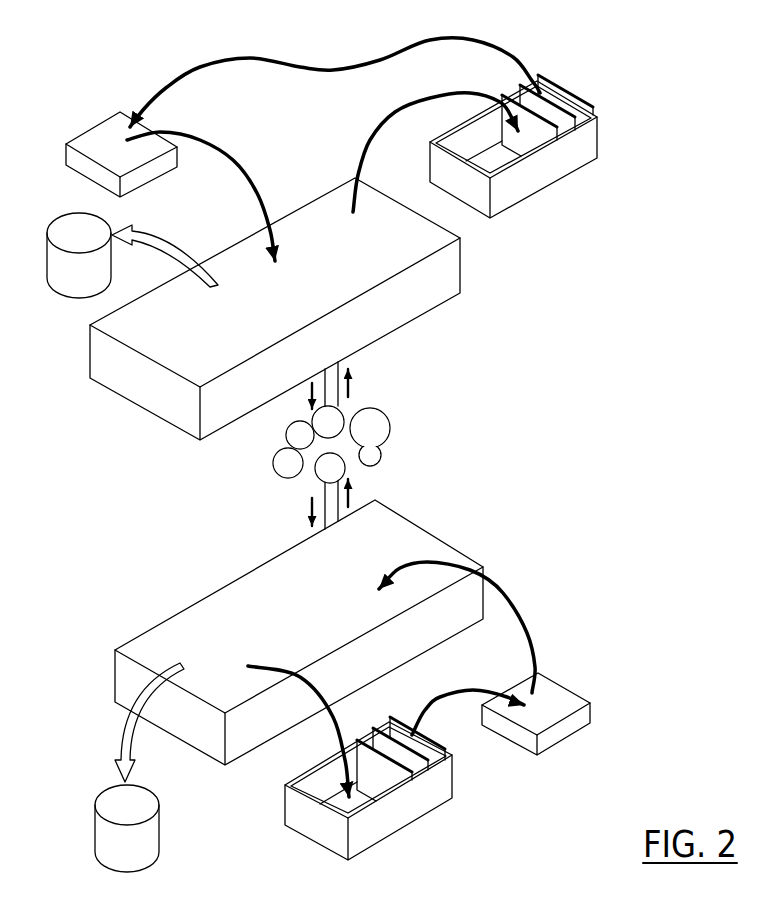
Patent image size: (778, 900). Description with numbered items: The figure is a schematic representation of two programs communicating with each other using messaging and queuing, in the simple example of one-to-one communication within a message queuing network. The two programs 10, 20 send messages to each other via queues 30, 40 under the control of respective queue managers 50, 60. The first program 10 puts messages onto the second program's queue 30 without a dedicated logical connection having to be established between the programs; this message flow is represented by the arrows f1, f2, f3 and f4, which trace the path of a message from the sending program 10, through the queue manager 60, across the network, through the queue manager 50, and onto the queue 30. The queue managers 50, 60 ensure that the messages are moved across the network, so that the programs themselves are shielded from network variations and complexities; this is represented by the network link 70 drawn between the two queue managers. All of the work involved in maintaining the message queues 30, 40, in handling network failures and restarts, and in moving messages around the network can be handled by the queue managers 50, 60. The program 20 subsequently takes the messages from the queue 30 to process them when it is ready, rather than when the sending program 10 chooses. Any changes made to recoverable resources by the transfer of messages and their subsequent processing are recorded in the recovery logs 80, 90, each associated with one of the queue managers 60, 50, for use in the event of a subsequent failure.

The first program 10 is at (100, 140).
The second program 20 is at (560, 728).
The queue 30 is at (398, 815).
The queue 40 is at (558, 167).
The queue manager 50 is at (170, 620).
The queue manager 60 is at (100, 352).
The network link 70 is at (317, 485).
The recovery log 80 is at (77, 225).
The recovery log 90 is at (100, 828).
The message flow arrow f1 is at (243, 170).
The message flow arrow f2 is at (307, 395).
The message flow arrow f3 is at (305, 507).
The message flow arrow f4 is at (333, 720).